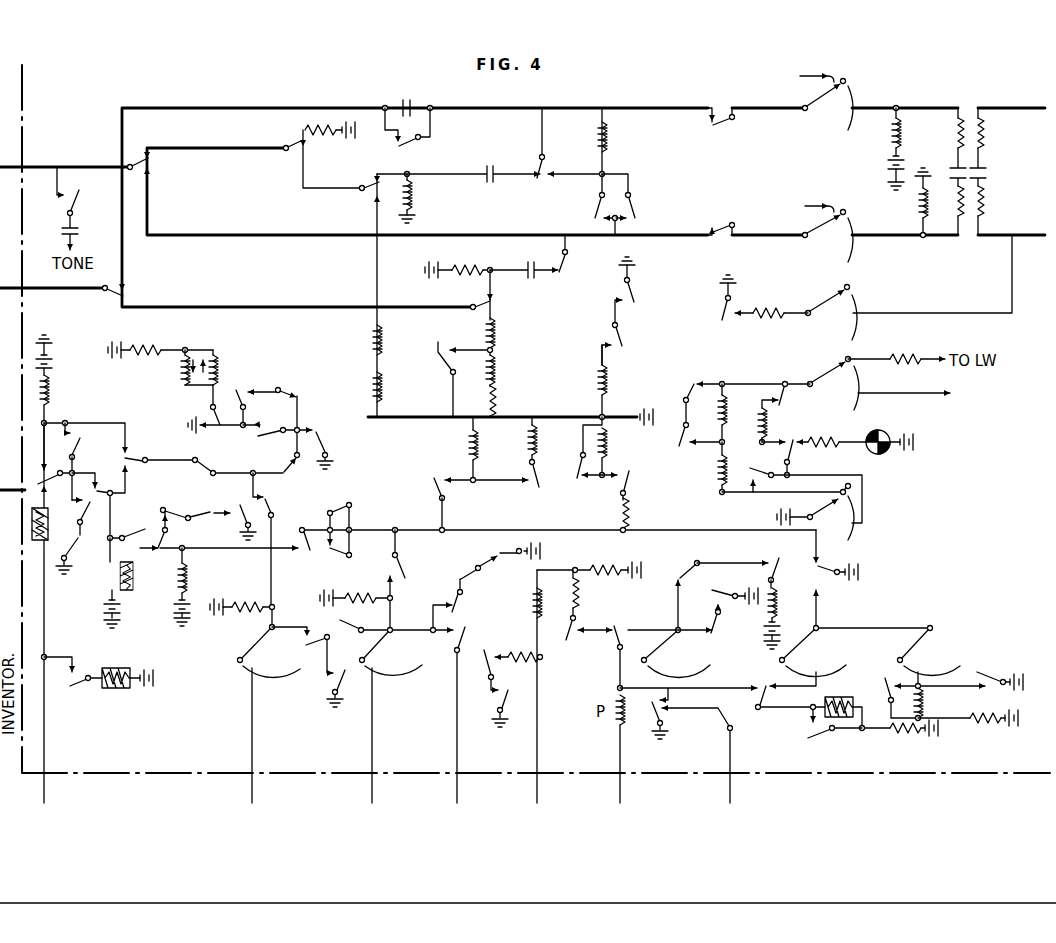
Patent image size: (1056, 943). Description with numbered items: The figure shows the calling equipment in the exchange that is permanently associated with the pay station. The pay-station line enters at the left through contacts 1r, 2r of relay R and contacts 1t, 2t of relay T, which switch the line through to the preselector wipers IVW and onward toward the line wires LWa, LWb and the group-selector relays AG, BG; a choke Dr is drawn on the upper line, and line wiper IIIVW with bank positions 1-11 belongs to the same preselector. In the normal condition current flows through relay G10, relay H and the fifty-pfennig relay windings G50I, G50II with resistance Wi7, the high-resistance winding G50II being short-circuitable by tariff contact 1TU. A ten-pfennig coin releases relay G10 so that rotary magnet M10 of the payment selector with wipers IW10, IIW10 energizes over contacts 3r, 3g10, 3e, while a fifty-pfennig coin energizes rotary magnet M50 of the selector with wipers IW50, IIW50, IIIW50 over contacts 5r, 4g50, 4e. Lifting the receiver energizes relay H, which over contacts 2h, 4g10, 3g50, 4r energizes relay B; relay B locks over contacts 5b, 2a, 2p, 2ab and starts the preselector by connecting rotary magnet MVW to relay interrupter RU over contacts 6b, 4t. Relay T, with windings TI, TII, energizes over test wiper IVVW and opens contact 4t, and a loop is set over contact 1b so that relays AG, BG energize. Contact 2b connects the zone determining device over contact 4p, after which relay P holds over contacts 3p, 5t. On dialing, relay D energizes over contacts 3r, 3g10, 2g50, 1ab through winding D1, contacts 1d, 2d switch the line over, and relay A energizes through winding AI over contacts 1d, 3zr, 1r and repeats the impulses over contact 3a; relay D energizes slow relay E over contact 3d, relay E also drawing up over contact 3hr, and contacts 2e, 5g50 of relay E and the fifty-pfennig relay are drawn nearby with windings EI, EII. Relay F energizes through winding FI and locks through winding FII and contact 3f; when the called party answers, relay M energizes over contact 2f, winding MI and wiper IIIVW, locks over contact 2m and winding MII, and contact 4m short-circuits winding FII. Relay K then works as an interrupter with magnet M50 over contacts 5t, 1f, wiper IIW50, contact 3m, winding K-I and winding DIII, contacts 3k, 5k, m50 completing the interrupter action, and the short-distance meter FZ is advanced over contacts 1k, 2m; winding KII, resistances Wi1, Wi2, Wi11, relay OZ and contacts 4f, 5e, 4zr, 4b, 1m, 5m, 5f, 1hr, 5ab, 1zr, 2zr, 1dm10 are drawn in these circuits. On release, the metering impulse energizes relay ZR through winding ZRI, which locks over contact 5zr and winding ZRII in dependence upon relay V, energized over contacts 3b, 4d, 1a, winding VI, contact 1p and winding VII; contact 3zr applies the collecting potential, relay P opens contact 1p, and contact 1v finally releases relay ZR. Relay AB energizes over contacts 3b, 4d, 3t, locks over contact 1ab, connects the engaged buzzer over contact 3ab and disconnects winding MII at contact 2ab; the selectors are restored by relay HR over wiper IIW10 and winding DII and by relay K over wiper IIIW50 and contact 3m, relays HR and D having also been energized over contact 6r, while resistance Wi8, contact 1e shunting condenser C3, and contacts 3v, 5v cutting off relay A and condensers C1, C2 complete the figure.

The relay contact 1r is at (149, 191).
The relay contact 3ab (tone) 3ab is at (72, 208).
The relay contact 2r is at (124, 289).
The relay contact 3zr is at (310, 159).
The relay P winding P is at (330, 138).
The relay contact 1d is at (362, 193).
The capacitor C3 is at (408, 99).
The relay contact 1e is at (407, 135).
The relay AI winding AI is at (415, 198).
The capacitor C1 is at (458, 165).
The relay contact 3v is at (565, 154).
The choke Dr is at (614, 142).
The relay contact 1b is at (596, 204).
The relay contact 3a is at (630, 197).
The relay A winding I A is at (459, 268).
The capacitor C2 is at (524, 261).
The relay contact 5v is at (566, 266).
The relay contact 2d is at (493, 291).
The relay contact 1v is at (635, 291).
The relay contact 5zr is at (625, 344).
The relay contact 1t is at (721, 125).
The relay contact 2t is at (721, 220).
The selector switch wiper IVW is at (828, 171).
The line wire a LWa is at (801, 76).
The line wire b LWb is at (803, 206).
The relay AG winding AG is at (907, 148).
The relay BG winding BG is at (912, 203).
The selector switch wiper IIIVW is at (832, 313).
The relay M winding I MI is at (771, 313).
The relay contact 2f is at (722, 309).
The selector switch wiper IVVW is at (879, 384).
The resistor R is at (896, 349).
The relay contact 5m is at (744, 402).
The relay T winding I TI is at (719, 413).
The relay T winding II TII is at (721, 468).
The relay ZR winding I ZRI is at (754, 421).
The relay contact 5f is at (792, 396).
The relay contact 4t is at (777, 458).
The resistor MVW is at (831, 453).
The signal lamp RU is at (889, 434).
The relay contact 6b is at (803, 484).
The selector switch positions 1-11 is at (803, 512).
The relay G10 winding G10 is at (383, 340).
The relay H winding H is at (390, 387).
The relay contact 1TU is at (458, 368).
The relay G50 winding I G50I is at (516, 336).
The relay G50 winding II G50II is at (521, 371).
The resistor Wi7 is at (520, 401).
The relay ZR winding II ZRII is at (596, 382).
The relay M winding II MII is at (486, 450).
The relay contact 2m is at (428, 505).
The relay FZ winding FZ is at (518, 441).
The relay contact 1k is at (533, 484).
The relay F winding II FII is at (602, 447).
The relay contact 4m is at (582, 480).
The relay contact 3f is at (625, 485).
The resistor Wi11 is at (645, 515).
The relay contact 3k is at (402, 563).
The relay contact 4g50 is at (459, 569).
The relay contact 4e is at (458, 610).
The relay contact 5r is at (510, 548).
The relay K winding II KII is at (589, 561).
The relay contact 1m is at (718, 585).
The relay D winding I D1 is at (54, 380).
The relay contact 1zr is at (83, 441).
The relay contact 1a is at (49, 457).
The relay contact 3t is at (100, 481).
The relay contact 1ab is at (160, 448).
The relay contact 2g50 is at (223, 471).
The relay contact 3g10 is at (306, 471).
The resistor Wi8 is at (160, 341).
The relay E winding II EII is at (180, 367).
The relay E winding I EI is at (218, 380).
The relay contact 3hr is at (215, 428).
The relay contact 2e is at (257, 397).
The relay contact 5g50 is at (302, 383).
The relay contact 3d is at (277, 437).
The relay contact 3r is at (321, 439).
The relay contact 4g10 is at (168, 510).
The relay contact 2h is at (154, 549).
The relay contact 4b is at (127, 527).
The relay contact 3g50 is at (209, 502).
The relay contact 4r is at (238, 522).
The relay contact 3e is at (272, 495).
The relay contact 5b is at (296, 550).
The relay contact 2a is at (334, 516).
The relay contact 2p is at (334, 551).
The relay V winding I VI is at (48, 524).
The relay contact 4d is at (89, 511).
The relay contact 3b is at (73, 556).
The relay AB winding AB is at (124, 583).
The relay B winding B is at (187, 586).
The magnet M10 is at (242, 603).
The selector switch wiper IW10 is at (268, 658).
The relay contact 1hr is at (318, 656).
The relay contact 5ab is at (325, 688).
The relay V winding II VII is at (98, 667).
The relay contact 1p is at (67, 690).
The magnet M50 is at (356, 601).
The relay contact 5k is at (396, 616).
The selector switch wiper IW50 is at (386, 659).
The relay contact 4f is at (469, 640).
The resistor Wi2 is at (522, 655).
The relay contact 4zr is at (484, 688).
The relay F winding I FI is at (523, 603).
The resistor Wi1 is at (597, 595).
The relay contact 5e is at (587, 638).
The relay contact 3p is at (621, 649).
The relay contact 2b is at (688, 712).
The selector switch wiper IIW50 is at (667, 657).
The relay contact 4p is at (697, 718).
The relay contact 5t is at (730, 589).
The relay contact 1f is at (724, 624).
The relay contact 2zr is at (766, 561).
The relay OZ winding OZ is at (785, 618).
The relay contact 2ab is at (873, 580).
The selector switch wiper IIIW50 is at (812, 659).
The relay contact 3m is at (784, 691).
The relay K winding I K-I is at (857, 704).
The relay contact m50 is at (820, 735).
The relay D winding III DIII is at (912, 738).
The selector switch wiper IIW10 is at (930, 659).
The relay contact 1dm10 is at (887, 691).
The relay HR winding HR is at (942, 704).
The relay D winding II DII is at (994, 728).
The relay contact 6r is at (998, 671).